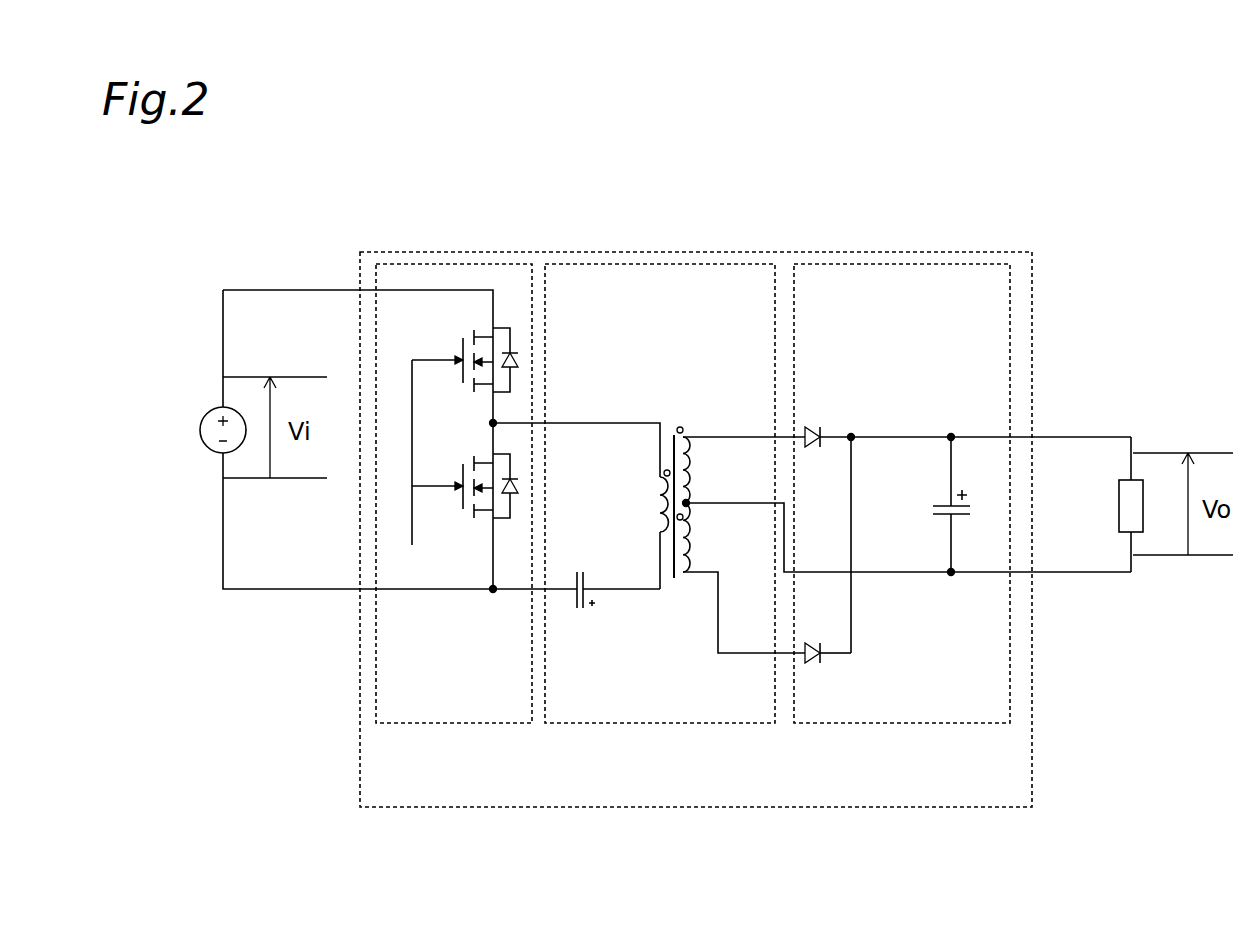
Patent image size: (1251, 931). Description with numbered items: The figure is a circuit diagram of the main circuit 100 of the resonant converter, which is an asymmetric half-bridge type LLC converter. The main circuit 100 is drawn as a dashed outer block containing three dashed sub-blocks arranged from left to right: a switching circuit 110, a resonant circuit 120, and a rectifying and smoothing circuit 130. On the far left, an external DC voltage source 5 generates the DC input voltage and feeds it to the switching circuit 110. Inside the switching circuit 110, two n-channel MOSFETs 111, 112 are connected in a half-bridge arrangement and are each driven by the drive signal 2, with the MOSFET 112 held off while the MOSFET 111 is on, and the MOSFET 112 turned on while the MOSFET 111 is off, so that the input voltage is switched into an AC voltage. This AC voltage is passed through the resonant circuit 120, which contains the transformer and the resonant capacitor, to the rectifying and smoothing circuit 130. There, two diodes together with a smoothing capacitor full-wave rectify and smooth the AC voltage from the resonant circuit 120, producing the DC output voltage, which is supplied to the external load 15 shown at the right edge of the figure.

The main circuit 100 is at (630, 252).
The switching circuit 110 is at (485, 723).
The resonant circuit 120 is at (642, 723).
The rectifying and smoothing circuit 130 is at (838, 723).
The MOSFET 111 is at (463, 345).
The MOSFET 112 is at (463, 472).
The drive signal Sdrv 2 is at (407, 507).
The DC voltage source 5 is at (223, 407).
The load 15 is at (1119, 515).